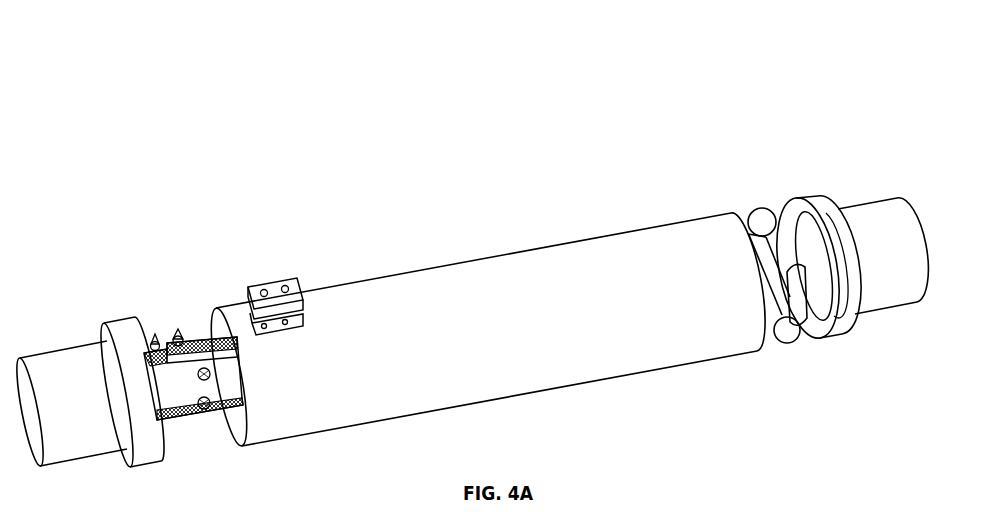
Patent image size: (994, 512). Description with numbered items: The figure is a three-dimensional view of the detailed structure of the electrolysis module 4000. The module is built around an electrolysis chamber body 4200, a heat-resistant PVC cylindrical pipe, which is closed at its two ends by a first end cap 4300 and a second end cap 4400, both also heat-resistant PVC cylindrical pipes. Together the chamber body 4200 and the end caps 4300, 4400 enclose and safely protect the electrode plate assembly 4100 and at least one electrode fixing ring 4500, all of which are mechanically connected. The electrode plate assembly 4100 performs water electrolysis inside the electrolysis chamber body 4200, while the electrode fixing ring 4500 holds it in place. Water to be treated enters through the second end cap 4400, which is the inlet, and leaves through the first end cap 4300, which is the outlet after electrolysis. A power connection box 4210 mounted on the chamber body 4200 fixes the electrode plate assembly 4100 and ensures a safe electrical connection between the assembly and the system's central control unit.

The electrolysis module 4000 is at (811, 95).
The electrode plate assembly 4100 is at (190, 320).
The electrolysis chamber body 4200 is at (484, 308).
The power connection box 4210 is at (275, 261).
The first end cap 4300 is at (88, 370).
The second end cap 4400 is at (850, 235).
The electrode fixing ring 4500 is at (751, 227).